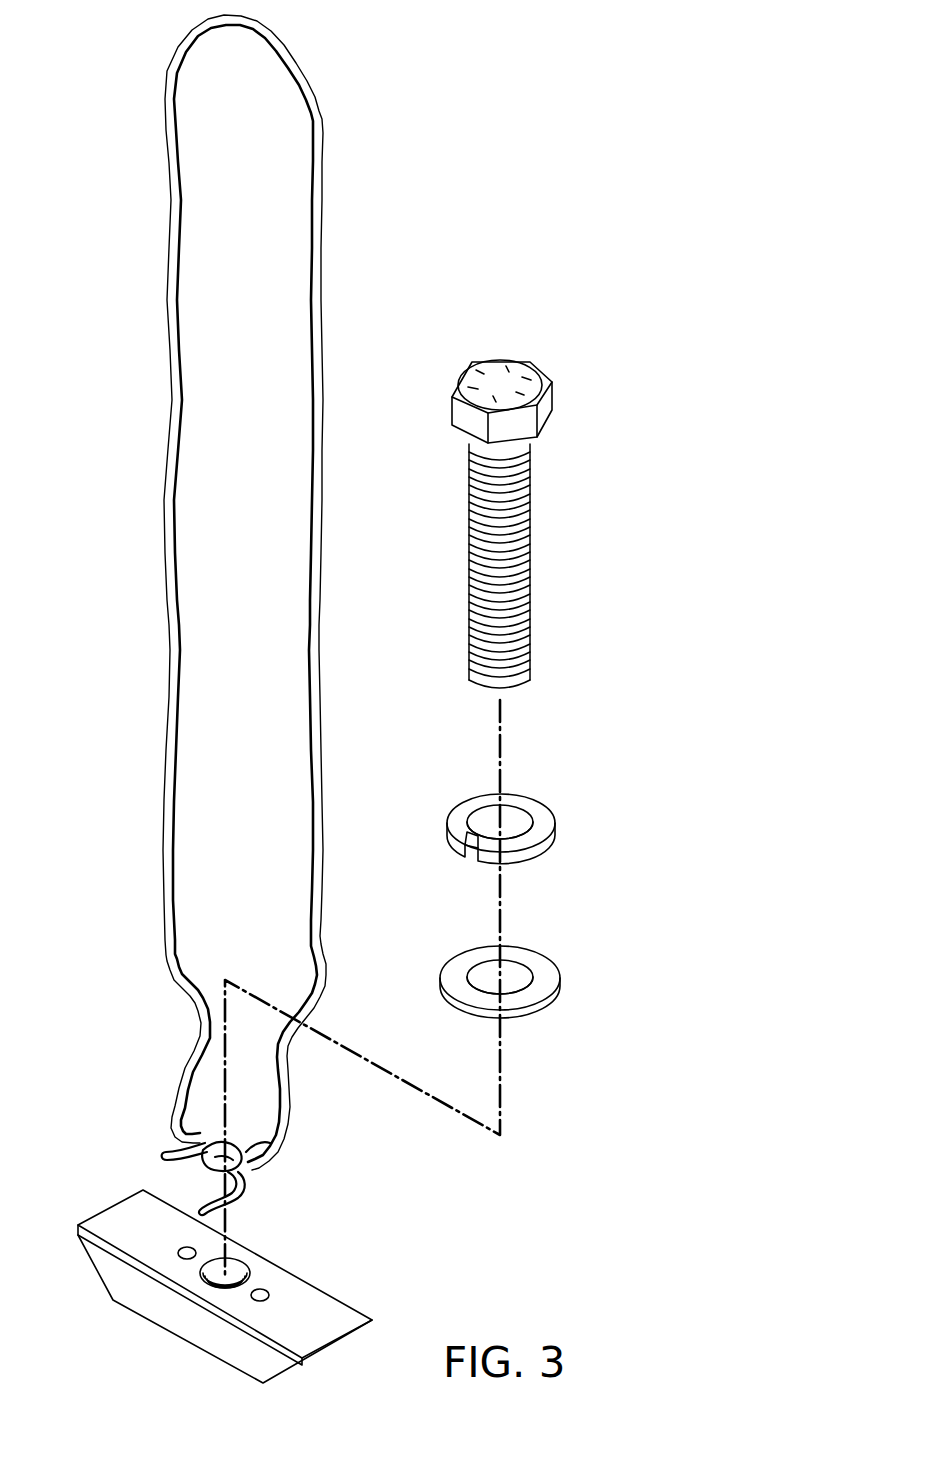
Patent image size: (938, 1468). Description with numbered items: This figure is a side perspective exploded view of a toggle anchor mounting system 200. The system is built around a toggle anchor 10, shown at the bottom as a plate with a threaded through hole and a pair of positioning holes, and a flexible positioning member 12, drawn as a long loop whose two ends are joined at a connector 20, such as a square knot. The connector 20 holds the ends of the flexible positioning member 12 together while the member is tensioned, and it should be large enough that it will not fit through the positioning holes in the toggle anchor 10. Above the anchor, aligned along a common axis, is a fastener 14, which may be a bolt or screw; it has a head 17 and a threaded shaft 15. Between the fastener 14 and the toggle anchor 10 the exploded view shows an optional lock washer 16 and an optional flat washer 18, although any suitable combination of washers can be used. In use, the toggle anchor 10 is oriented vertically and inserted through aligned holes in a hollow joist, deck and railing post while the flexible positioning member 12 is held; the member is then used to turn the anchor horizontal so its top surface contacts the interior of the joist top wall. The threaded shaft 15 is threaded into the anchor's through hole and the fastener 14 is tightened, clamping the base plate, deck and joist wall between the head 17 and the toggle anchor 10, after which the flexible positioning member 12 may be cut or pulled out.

The toggle anchor mounting system 200 is at (592, 171).
The flexible positioning member 12 is at (165, 516).
The connector 20 is at (233, 1147).
The fastener 14 is at (573, 498).
The head 17 is at (528, 362).
The threaded shaft 15 is at (531, 600).
The lock washer 16 is at (557, 828).
The flat washer 18 is at (560, 983).
The toggle anchor 10 is at (93, 1271).